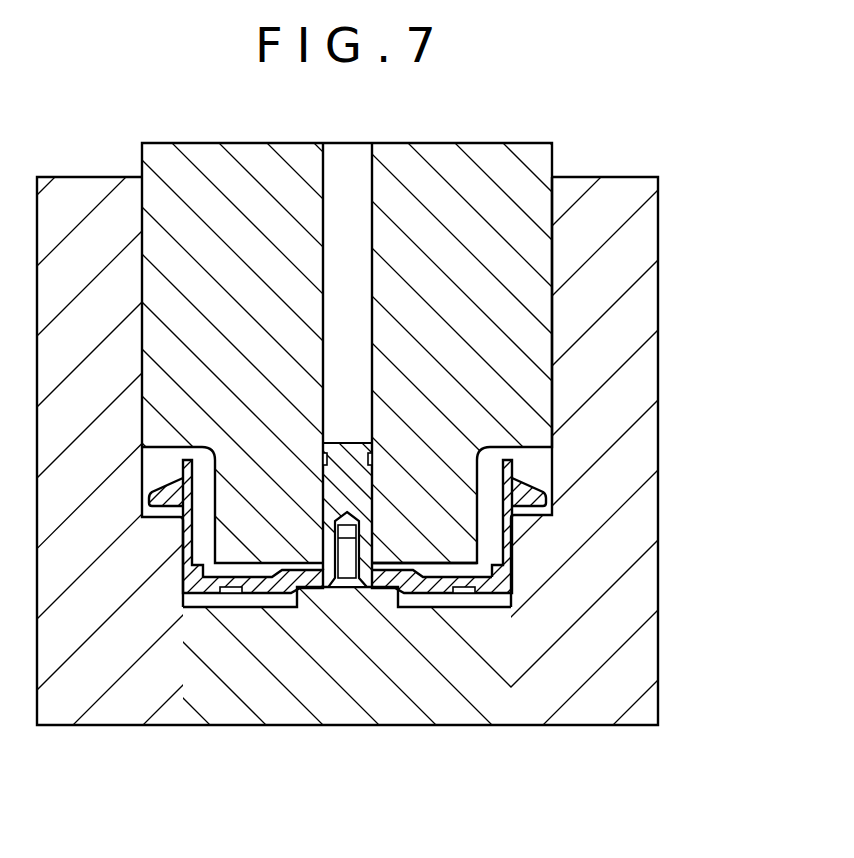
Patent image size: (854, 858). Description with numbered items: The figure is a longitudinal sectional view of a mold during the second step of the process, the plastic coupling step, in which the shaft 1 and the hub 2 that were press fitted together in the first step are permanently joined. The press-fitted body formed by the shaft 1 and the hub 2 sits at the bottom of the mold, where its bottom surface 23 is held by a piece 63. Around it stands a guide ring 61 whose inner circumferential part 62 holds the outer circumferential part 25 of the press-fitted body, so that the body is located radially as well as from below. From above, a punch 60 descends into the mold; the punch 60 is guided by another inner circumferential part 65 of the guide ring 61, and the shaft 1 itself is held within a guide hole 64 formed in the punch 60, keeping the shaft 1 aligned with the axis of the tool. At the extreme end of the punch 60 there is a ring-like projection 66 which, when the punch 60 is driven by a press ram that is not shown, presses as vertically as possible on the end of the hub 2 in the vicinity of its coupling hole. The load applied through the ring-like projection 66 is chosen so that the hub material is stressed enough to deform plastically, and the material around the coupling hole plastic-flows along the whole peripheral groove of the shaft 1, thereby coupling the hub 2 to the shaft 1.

The shaft 1 is at (427, 429).
The hub 2 is at (508, 597).
The bottom surface 23 is at (305, 605).
The outer circumferential part 25 is at (178, 567).
The punch 60 is at (460, 183).
The guide ring 61 is at (623, 330).
The inner circumferential part 62 is at (203, 552).
The piece 63 is at (427, 678).
The guide hole 64 is at (367, 492).
The inner circumferential part 65 is at (554, 248).
The ring-like projection 66 is at (378, 565).